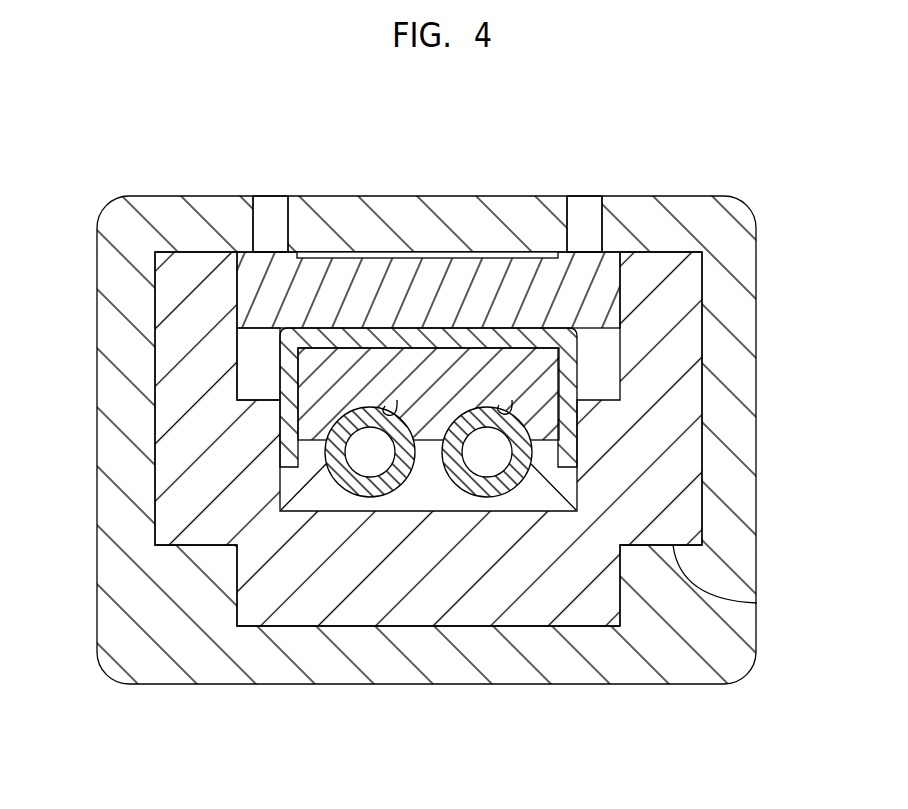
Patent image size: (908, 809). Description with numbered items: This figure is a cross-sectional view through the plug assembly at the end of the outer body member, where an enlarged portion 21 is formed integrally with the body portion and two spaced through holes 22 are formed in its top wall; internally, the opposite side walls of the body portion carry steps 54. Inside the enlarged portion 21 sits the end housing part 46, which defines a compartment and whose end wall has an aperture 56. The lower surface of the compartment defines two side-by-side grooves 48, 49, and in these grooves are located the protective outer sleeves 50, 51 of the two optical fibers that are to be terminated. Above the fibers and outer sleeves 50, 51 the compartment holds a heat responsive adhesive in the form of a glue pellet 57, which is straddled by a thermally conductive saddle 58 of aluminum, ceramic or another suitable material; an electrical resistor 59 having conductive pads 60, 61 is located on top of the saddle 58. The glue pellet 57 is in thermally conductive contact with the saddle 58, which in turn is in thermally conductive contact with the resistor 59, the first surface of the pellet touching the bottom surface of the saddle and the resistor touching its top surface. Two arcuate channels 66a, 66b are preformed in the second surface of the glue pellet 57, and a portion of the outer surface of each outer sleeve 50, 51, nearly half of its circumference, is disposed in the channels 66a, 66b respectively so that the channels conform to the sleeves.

The enlarged portion 21 is at (757, 319).
The through holes 22 is at (441, 179).
The end housing part 46 is at (163, 298).
The groove 48 is at (347, 497).
The groove 49 is at (500, 494).
The protective outer sleeve 50 is at (328, 466).
The protective outer sleeve 51 is at (532, 462).
The step 54 is at (757, 603).
The aperture 56 is at (252, 352).
The glue pellet 57 is at (583, 362).
The saddle 58 is at (582, 389).
The electrical resistor 59 is at (440, 262).
The conductive pad 60 is at (276, 252).
The conductive pad 61 is at (576, 252).
The channel 66a is at (397, 400).
The channel 66b is at (512, 400).